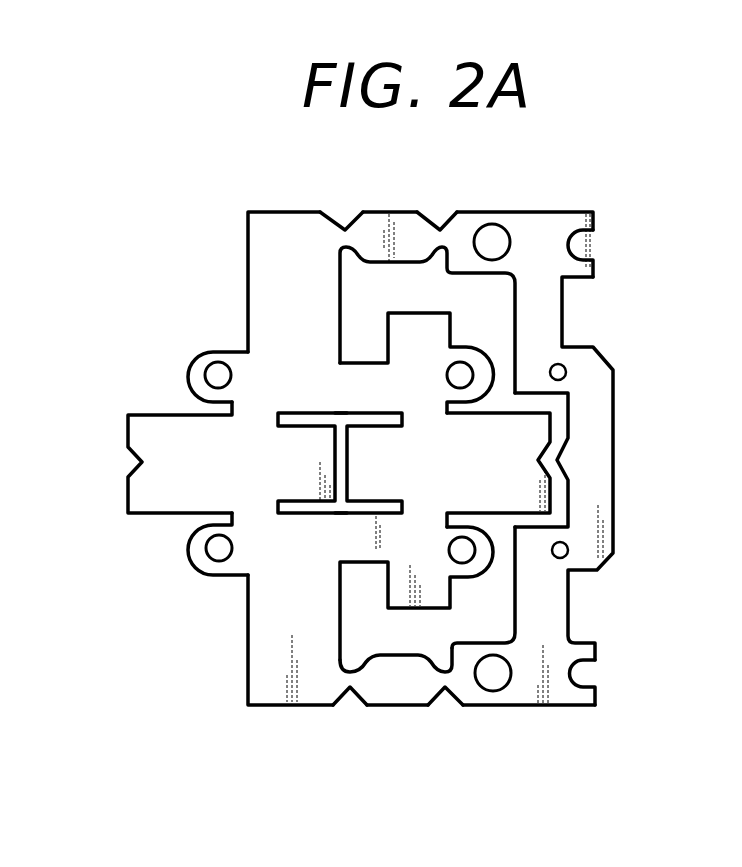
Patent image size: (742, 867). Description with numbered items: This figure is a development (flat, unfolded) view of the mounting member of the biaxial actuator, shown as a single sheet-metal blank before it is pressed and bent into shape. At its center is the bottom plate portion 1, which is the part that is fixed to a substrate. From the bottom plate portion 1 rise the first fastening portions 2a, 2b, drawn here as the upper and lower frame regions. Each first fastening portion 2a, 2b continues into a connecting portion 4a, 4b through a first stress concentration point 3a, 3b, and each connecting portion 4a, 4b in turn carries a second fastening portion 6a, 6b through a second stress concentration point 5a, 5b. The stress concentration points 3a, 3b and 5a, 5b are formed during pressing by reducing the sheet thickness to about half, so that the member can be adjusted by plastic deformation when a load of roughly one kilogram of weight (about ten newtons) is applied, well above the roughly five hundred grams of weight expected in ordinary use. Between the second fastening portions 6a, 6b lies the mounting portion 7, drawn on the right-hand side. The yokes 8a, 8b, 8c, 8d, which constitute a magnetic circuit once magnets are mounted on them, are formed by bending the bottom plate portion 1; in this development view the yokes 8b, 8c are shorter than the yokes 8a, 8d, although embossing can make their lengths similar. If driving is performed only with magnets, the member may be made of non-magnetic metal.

The bottom plate portion 1 is at (196, 565).
The first fastening portion 2a is at (263, 283).
The first fastening portion 2b is at (268, 642).
The first stress concentration point 3a is at (345, 228).
The first stress concentration point 3b is at (347, 703).
The connecting portion 4a is at (400, 230).
The connecting portion 4b is at (408, 703).
The second stress concentration point 5a is at (441, 228).
The second stress concentration point 5b is at (443, 703).
The second fastening portion 6a is at (555, 317).
The second fastening portion 6b is at (578, 673).
The mounting portion 7 is at (600, 500).
The yoke 8a is at (152, 484).
The yoke 8b is at (313, 465).
The yoke 8c is at (367, 458).
The yoke 8d is at (522, 442).